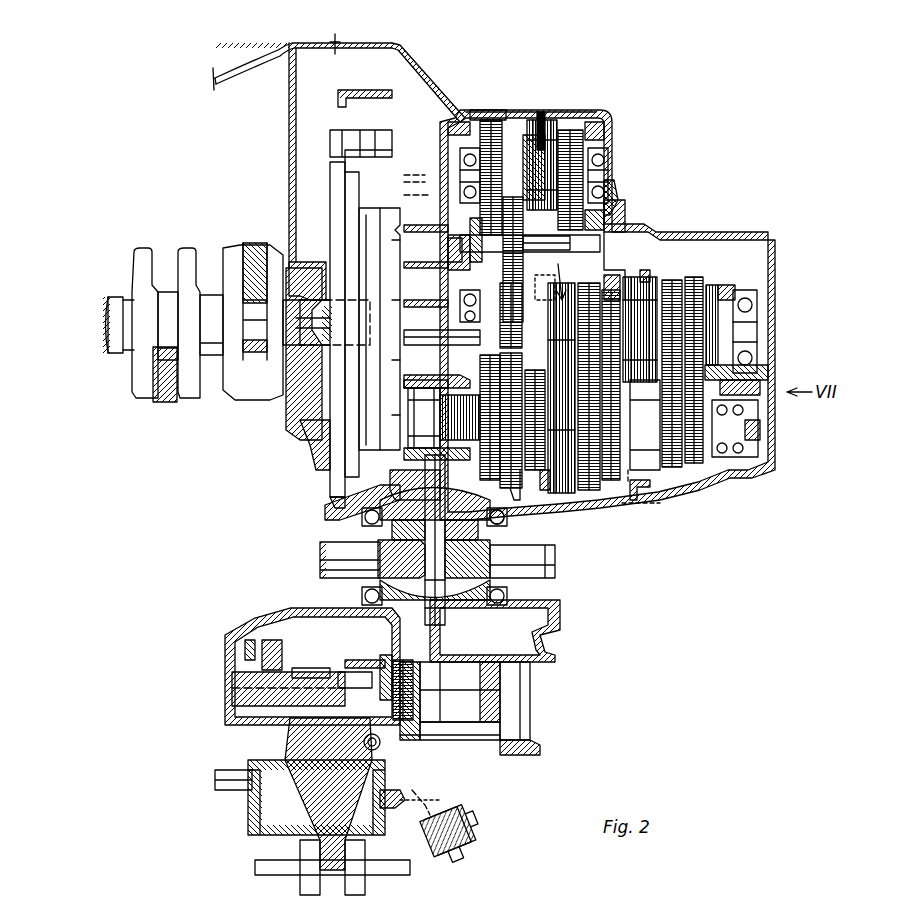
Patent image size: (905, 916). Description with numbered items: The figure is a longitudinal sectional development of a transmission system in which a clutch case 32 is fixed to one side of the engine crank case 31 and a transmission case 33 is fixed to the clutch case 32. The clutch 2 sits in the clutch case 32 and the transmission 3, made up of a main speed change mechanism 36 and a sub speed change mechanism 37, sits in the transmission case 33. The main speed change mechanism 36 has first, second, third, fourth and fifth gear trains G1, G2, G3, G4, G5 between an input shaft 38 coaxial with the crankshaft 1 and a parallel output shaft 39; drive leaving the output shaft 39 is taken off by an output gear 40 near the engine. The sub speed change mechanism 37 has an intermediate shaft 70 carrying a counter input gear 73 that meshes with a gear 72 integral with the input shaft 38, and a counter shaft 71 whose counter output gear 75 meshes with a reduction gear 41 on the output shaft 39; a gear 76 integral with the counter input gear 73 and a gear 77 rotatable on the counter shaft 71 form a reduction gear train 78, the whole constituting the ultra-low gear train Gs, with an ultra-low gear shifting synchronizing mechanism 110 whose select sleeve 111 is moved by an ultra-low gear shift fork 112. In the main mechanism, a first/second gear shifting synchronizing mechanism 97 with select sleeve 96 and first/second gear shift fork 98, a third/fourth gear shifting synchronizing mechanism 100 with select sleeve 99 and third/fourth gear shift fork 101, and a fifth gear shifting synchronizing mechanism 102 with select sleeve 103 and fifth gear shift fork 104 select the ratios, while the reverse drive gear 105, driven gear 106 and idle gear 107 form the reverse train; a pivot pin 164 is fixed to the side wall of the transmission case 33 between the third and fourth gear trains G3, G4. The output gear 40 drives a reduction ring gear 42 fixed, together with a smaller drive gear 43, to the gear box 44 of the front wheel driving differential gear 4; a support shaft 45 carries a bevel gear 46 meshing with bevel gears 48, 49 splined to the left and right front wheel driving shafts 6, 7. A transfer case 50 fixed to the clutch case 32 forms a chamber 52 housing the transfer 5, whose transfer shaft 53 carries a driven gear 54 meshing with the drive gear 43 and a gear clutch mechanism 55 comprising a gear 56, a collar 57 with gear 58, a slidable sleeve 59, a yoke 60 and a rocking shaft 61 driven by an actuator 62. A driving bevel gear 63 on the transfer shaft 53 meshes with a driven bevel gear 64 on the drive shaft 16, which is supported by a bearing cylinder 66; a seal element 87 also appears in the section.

The crankshaft 1 is at (118, 352).
The clutch 2 is at (330, 203).
The transmission 3 is at (646, 205).
The front wheel driving differential gear 4 is at (478, 614).
The transfer 5 is at (299, 610).
The left front wheel driving shaft 6 is at (330, 570).
The right front wheel driving shaft 7 is at (528, 578).
The drive shaft 16 is at (332, 806).
The crank case 31 is at (240, 75).
The clutch case 32 is at (432, 78).
The transmission case 33 is at (568, 112).
The main speed change mechanism 36 is at (612, 278).
The sub speed change mechanism 37 is at (606, 222).
The input shaft 38 is at (546, 352).
The output shaft 39 is at (736, 428).
The output gear 40 is at (455, 392).
The reduction gear 41 is at (480, 338).
The reduction ring gear 42 is at (444, 418).
The drive gear 43 is at (432, 476).
The gear box 44 is at (395, 494).
The support shaft 45 is at (436, 586).
The bevel gear 46 is at (436, 540).
The bevel gear 48 is at (401, 549).
The bevel gear 49 is at (467, 549).
The transfer case 50 is at (273, 620).
The chamber 52 is at (345, 640).
The transfer shaft 53 is at (460, 692).
The driven gear 54 is at (424, 736).
The gear clutch mechanism 55 is at (402, 745).
The gear 56 is at (388, 648).
The collar 57 is at (311, 662).
The gear 58 is at (413, 690).
The sleeve 59 is at (365, 650).
The yoke 60 is at (356, 668).
The rocking shaft 61 is at (378, 748).
The actuator 62 is at (476, 822).
The driving bevel gear 63 is at (280, 662).
The driven bevel gear 64 is at (288, 689).
The bearing cylinder 66 is at (250, 778).
The intermediate shaft 70 is at (478, 240).
The counter shaft 71 is at (462, 173).
The gear 72 is at (498, 310).
The counter input gear 73 is at (501, 221).
The counter output gear 75 is at (462, 122).
The gear 76 is at (560, 238).
The gear 77 is at (590, 130).
The reduction gear train 78 is at (576, 128).
The seal 87 is at (450, 247).
The select sleeve 96 is at (535, 408).
The first/second gear shifting synchronizing mechanism 97 is at (509, 316).
The first/second gear shift fork 98 is at (552, 492).
The select sleeve 99 is at (668, 282).
The third/fourth gear shifting synchronizing mechanism 100 is at (655, 282).
The third/fourth gear shift fork 101 is at (634, 280).
The fifth gear shifting synchronizing mechanism 102 is at (746, 288).
The select sleeve 103 is at (722, 282).
The fifth gear shift fork 104 is at (728, 282).
The drive gear 105 is at (574, 342).
The driven gear 106 is at (578, 490).
The idle gear 107 is at (560, 266).
The ultra-low gear shifting synchronizing mechanism 110 is at (530, 118).
The select sleeve 111 is at (520, 161).
The ultra-low gear shift fork 112 is at (541, 112).
The pivot pin 164 is at (646, 492).
The first gear train G1 is at (510, 514).
The second gear train G2 is at (594, 492).
The third gear train G3 is at (613, 482).
The fourth gear train G4 is at (676, 474).
The fifth gear train G5 is at (698, 470).
The ultra-low gear train Gs is at (492, 110).